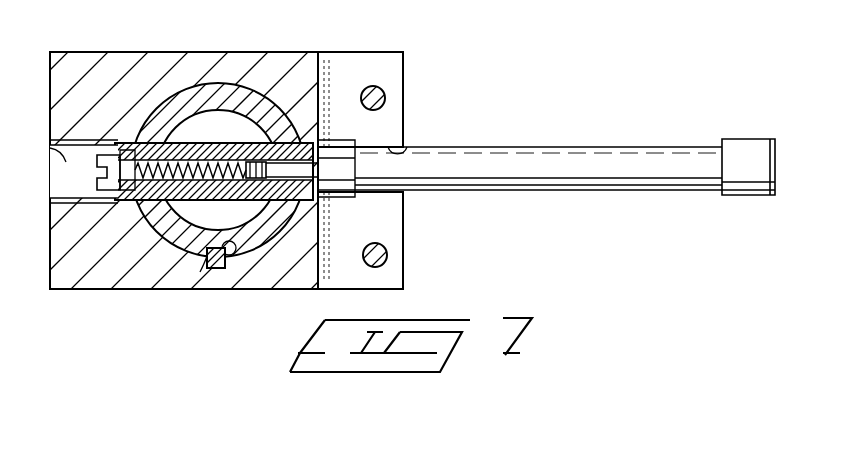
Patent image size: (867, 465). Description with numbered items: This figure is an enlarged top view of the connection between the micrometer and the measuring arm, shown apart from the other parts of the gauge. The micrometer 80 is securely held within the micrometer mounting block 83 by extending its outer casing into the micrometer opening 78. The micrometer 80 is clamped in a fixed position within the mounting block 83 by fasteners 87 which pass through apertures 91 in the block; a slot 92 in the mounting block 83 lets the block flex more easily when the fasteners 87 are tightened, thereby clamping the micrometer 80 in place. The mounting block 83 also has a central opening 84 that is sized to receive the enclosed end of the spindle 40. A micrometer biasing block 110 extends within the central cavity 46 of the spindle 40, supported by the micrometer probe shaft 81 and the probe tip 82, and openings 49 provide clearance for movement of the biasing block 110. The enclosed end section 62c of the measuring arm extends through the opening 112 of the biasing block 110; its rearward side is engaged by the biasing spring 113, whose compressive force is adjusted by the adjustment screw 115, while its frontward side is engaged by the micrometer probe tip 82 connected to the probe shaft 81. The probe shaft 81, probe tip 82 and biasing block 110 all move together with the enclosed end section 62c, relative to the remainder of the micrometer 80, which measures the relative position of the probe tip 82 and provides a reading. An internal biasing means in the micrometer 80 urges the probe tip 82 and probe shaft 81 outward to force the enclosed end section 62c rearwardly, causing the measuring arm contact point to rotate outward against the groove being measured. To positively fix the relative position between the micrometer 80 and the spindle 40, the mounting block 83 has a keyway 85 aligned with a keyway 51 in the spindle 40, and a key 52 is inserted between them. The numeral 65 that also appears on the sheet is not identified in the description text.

The spindle 40 is at (178, 104).
The central opening 84 is at (232, 96).
The slot 92 is at (353, 60).
The micrometer mounting block 83 is at (412, 79).
The fasteners 87 is at (385, 100).
The micrometer opening 78 is at (400, 147).
The enclosed end section 62c is at (297, 142).
The micrometer biasing block 110 is at (150, 142).
The central cavity 46 is at (186, 131).
The openings 49 is at (48, 172).
The adjustment screw 115 is at (117, 200).
The opening 112 is at (185, 203).
The biasing spring 113 is at (124, 228).
The micrometer probe tip 82 is at (267, 208).
The keyway 51 is at (237, 251).
The key 52 is at (198, 273).
The keyway 85 is at (215, 270).
The micrometer probe shaft 81 is at (350, 187).
The apertures 91 is at (385, 250).
The micrometer 80 is at (600, 187).
The element 65 is at (539, 462).